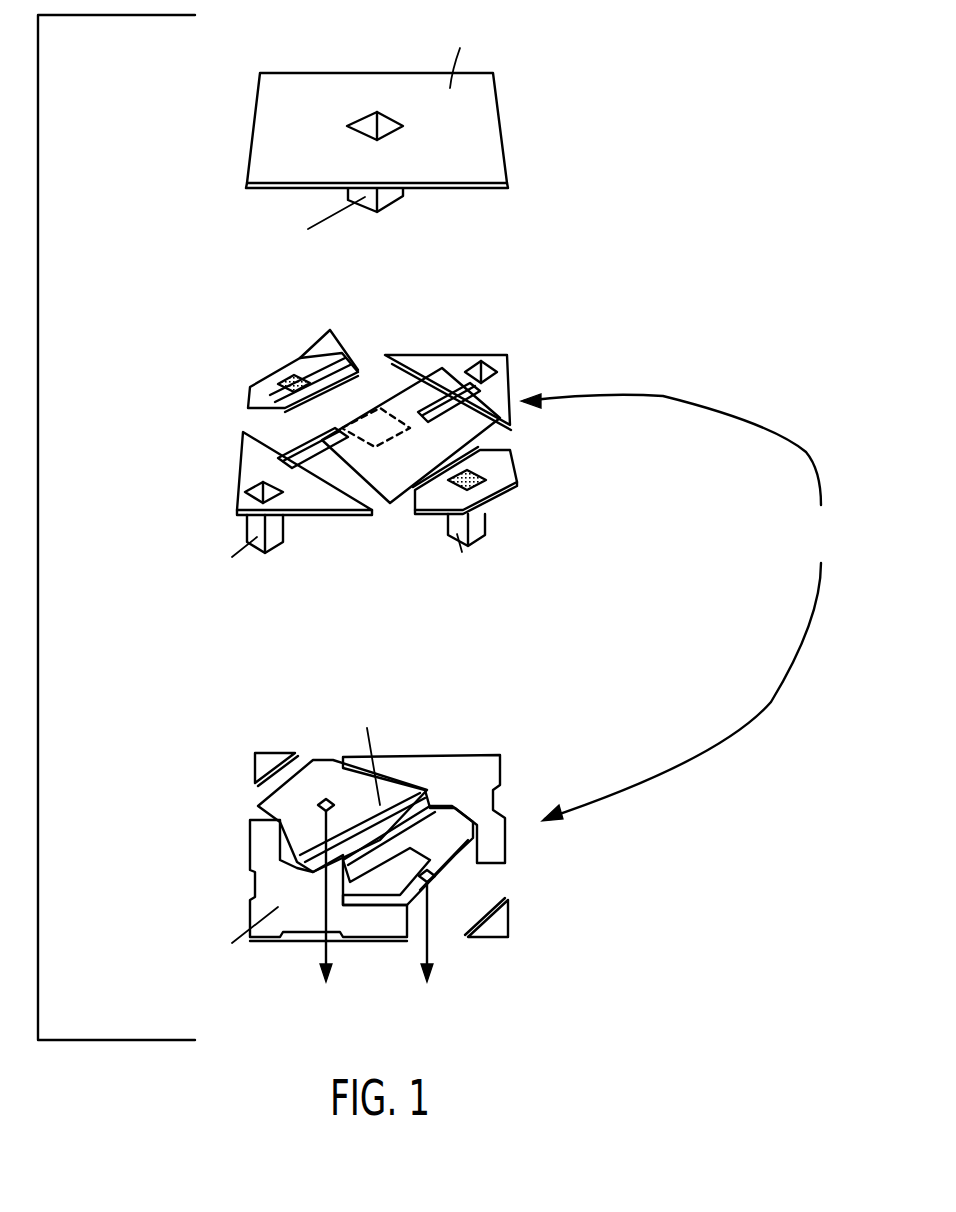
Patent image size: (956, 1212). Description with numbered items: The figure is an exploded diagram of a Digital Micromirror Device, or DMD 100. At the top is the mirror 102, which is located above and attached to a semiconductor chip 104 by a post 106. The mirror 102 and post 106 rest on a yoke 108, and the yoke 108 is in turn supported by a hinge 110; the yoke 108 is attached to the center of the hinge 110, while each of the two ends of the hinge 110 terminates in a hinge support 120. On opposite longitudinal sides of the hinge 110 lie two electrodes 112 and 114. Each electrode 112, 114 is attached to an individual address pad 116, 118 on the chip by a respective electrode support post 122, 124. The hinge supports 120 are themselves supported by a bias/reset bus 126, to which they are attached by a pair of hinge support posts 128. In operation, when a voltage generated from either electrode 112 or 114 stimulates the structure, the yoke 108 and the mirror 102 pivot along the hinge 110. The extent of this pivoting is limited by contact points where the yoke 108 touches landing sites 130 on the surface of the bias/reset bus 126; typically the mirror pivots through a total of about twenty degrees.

The DMD 100 is at (562, 1021).
The mirror 102 is at (505, 128).
The semiconductor chip 104 is at (683, 607).
The post 106 is at (403, 193).
The yoke 108 is at (375, 447).
The hinge 110 is at (458, 385).
The electrode 112 is at (517, 468).
The electrode 114 is at (262, 392).
The address pad 116 is at (490, 886).
The address pad 118 is at (258, 798).
The hinge support 120 is at (512, 375).
The electrode support post 122 is at (490, 520).
The electrode support post 124 is at (268, 431).
The bias/reset bus 126 is at (478, 772).
The hinge support posts 128 is at (250, 524).
The landing sites 130 is at (268, 822).